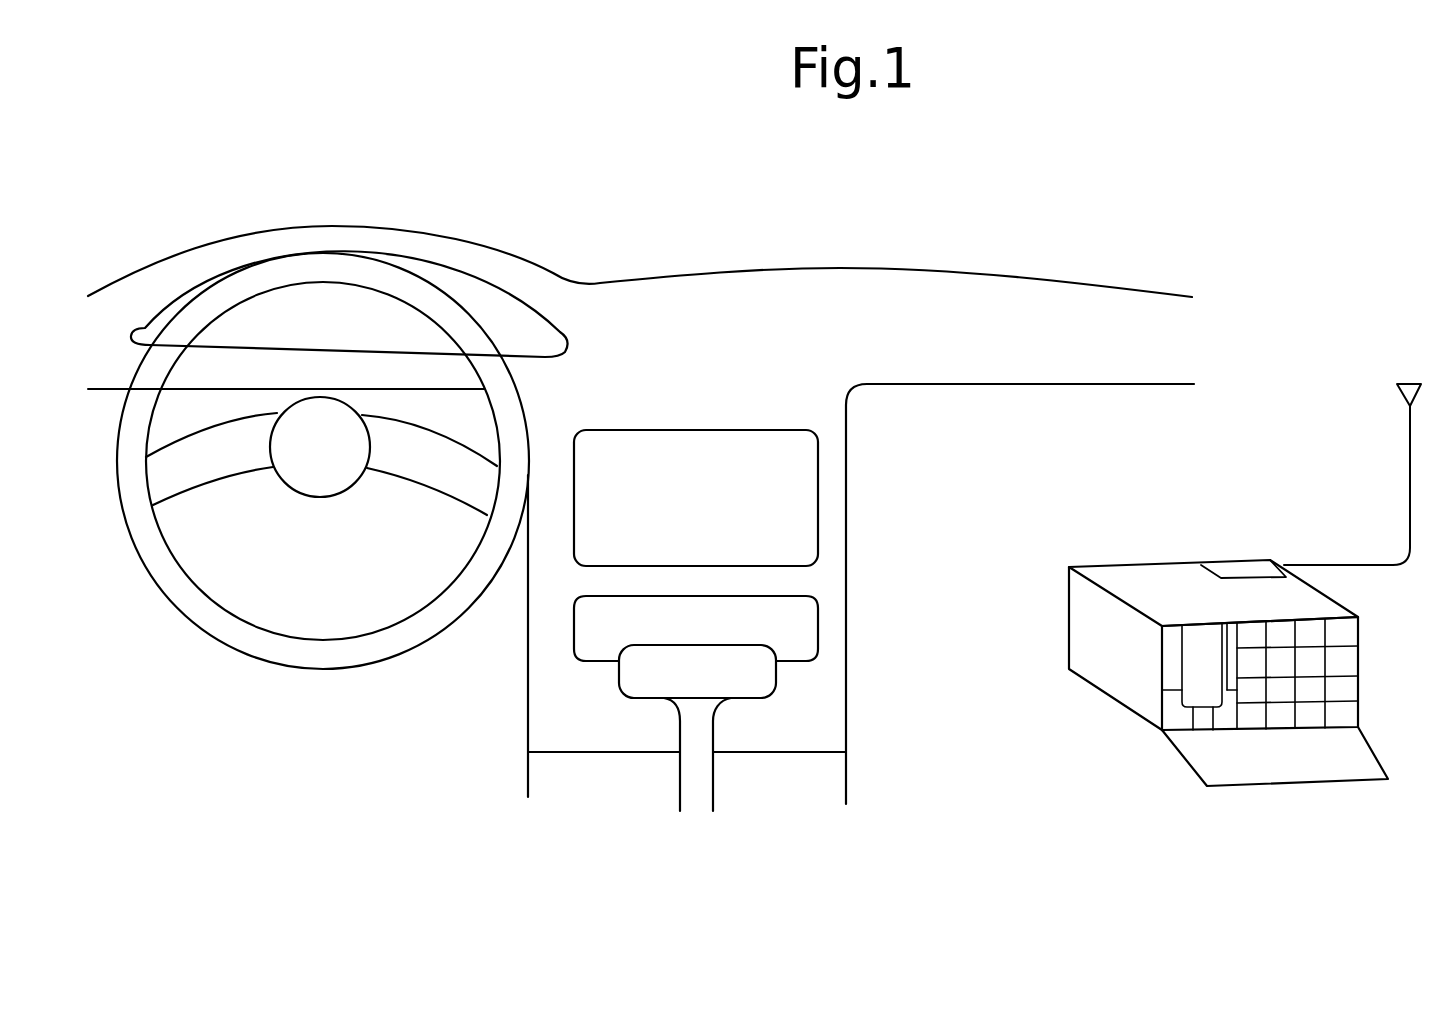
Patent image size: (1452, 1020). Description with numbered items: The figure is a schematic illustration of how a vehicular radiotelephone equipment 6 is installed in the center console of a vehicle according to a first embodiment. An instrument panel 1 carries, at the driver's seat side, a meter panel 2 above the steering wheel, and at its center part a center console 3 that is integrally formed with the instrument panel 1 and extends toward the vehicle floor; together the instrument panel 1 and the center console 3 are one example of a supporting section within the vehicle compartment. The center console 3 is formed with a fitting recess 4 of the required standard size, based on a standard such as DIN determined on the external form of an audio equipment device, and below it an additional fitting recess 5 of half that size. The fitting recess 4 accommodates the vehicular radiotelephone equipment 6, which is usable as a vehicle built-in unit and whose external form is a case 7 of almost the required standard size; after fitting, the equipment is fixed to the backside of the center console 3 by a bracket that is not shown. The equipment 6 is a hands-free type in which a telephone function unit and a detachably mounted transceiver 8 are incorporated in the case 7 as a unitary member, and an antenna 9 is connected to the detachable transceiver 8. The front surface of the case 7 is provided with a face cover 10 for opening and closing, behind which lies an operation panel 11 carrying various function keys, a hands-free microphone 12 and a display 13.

The instrument panel 1 is at (864, 286).
The meter panel 2 is at (473, 255).
The center console 3 is at (538, 590).
The fitting recess 4 is at (1068, 565).
The additional fitting recess 5 is at (675, 640).
The vehicular radiotelephone equipment 6 is at (1190, 672).
The case 7 is at (1128, 574).
The transceiver 8 is at (1243, 573).
The antenna 9 is at (1407, 384).
The face cover 10 is at (1306, 773).
The operation panel 11 is at (1171, 714).
The hands-free microphone 12 is at (1202, 723).
The display 13 is at (1193, 635).